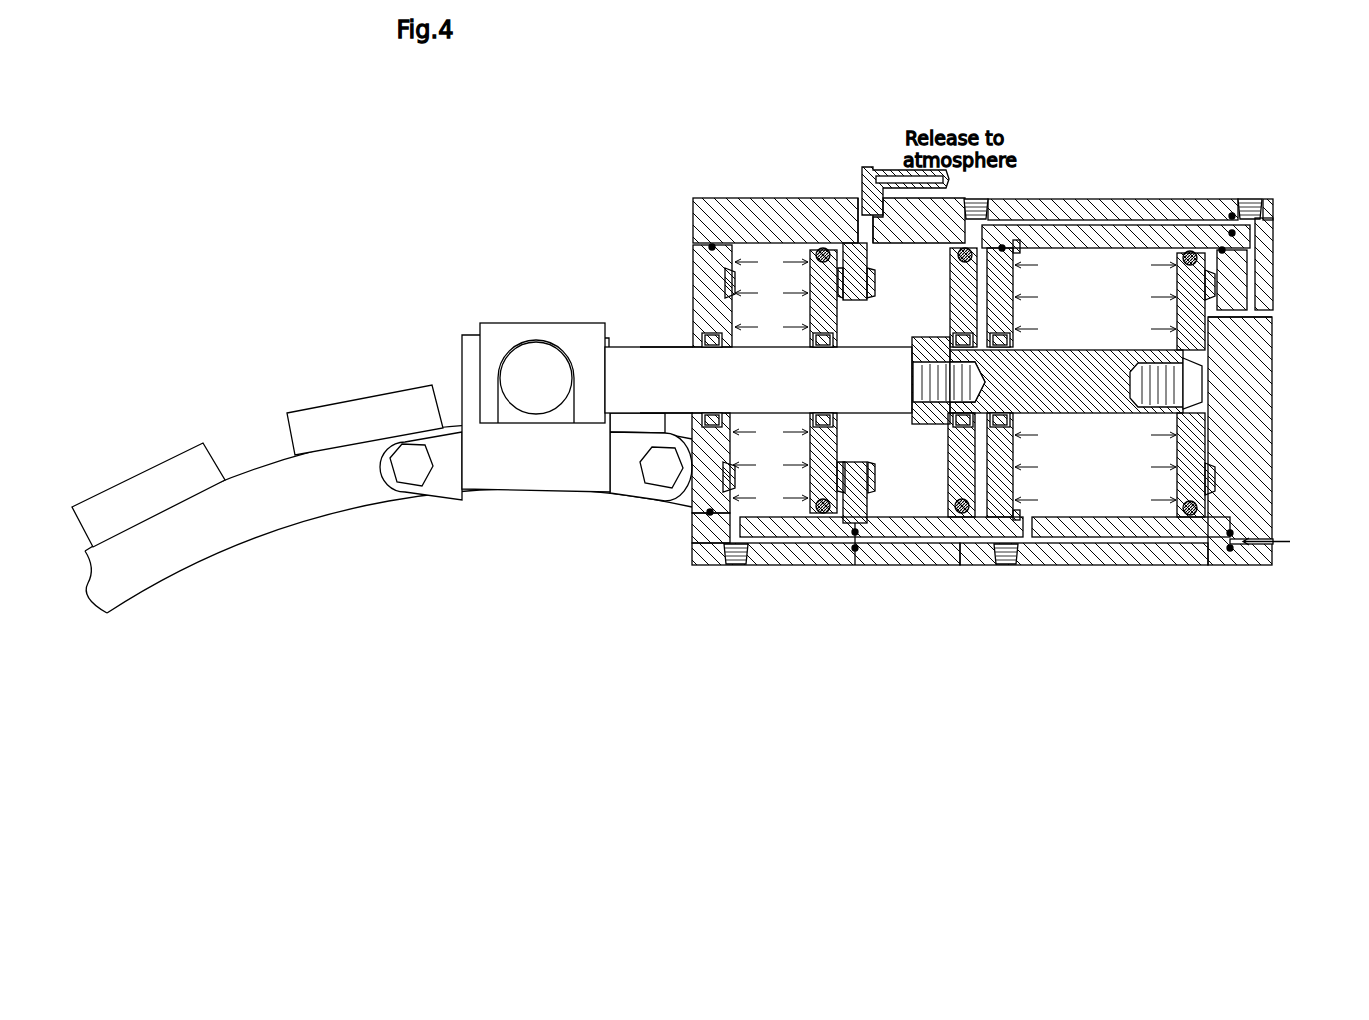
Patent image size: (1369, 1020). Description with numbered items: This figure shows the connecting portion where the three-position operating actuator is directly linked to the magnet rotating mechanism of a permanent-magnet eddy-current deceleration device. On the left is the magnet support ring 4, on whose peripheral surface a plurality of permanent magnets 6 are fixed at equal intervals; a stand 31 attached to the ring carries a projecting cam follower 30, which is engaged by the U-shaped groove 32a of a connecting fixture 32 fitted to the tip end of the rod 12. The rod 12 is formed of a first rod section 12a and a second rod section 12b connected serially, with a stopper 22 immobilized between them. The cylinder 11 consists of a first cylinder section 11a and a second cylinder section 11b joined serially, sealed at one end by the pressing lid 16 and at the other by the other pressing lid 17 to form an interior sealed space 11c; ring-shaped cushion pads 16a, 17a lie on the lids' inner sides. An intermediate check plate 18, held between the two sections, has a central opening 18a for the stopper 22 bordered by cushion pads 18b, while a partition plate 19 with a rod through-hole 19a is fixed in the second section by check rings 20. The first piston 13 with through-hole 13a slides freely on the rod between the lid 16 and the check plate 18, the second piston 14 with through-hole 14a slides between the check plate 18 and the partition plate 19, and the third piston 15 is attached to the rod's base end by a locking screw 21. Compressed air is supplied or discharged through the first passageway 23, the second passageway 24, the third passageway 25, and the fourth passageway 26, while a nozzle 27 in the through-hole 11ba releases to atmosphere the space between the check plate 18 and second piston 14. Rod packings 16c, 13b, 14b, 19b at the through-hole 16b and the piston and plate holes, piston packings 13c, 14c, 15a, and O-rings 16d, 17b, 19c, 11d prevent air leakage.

The magnet support ring 4 is at (183, 553).
The permanent magnets 6 is at (360, 408).
The cylinder 11 is at (1077, 605).
The first cylinder section 11a is at (838, 553).
The second cylinder section 11b is at (983, 553).
The through-hole 11ba is at (875, 256).
The sealed space 11c is at (1077, 495).
The O-ring 11d is at (860, 548).
The rod 12 is at (627, 342).
The first rod section 12a is at (655, 360).
The second rod section 12b is at (1112, 403).
The first piston 13 is at (805, 478).
The through-hole 13a is at (840, 392).
The rod packing 13b is at (840, 372).
The piston packing 13c is at (813, 248).
The second piston 14 is at (962, 307).
The through-hole 14a is at (1015, 360).
The rod packing 14b is at (957, 475).
The piston packing 14c is at (952, 256).
The third piston 15 is at (1183, 483).
The piston packing 15a is at (1222, 222).
The pressing lid 16 is at (706, 282).
The cushion pad 16a is at (757, 290).
The through-hole 16b is at (686, 356).
The rod packing 16c is at (712, 440).
The O-ring 16d is at (710, 535).
The other pressing lid 17 is at (1270, 450).
The cushion pad 17a is at (1208, 285).
The O-ring 17b is at (1225, 250).
The intermediate check plate 18 is at (850, 250).
The opening 18a is at (830, 300).
The cushion pad 18b is at (878, 296).
The partition plate 19 is at (1003, 290).
The through-hole 19a is at (1043, 350).
The rod packing 19b is at (1040, 415).
The O-ring 19c is at (1012, 250).
The check rings 20 is at (983, 235).
The locking screw 21 is at (1185, 383).
The stopper 22 is at (935, 425).
The first passageway 23 is at (1272, 318).
The second passageway 24 is at (1280, 545).
The third passageway 25 is at (1183, 240).
The fourth passageway 26 is at (818, 542).
The nozzle 27 is at (873, 168).
The cam follower 30 is at (530, 367).
The stand 31 is at (490, 475).
The connecting fixture 32 is at (577, 342).
The U-shaped groove 32a is at (503, 413).